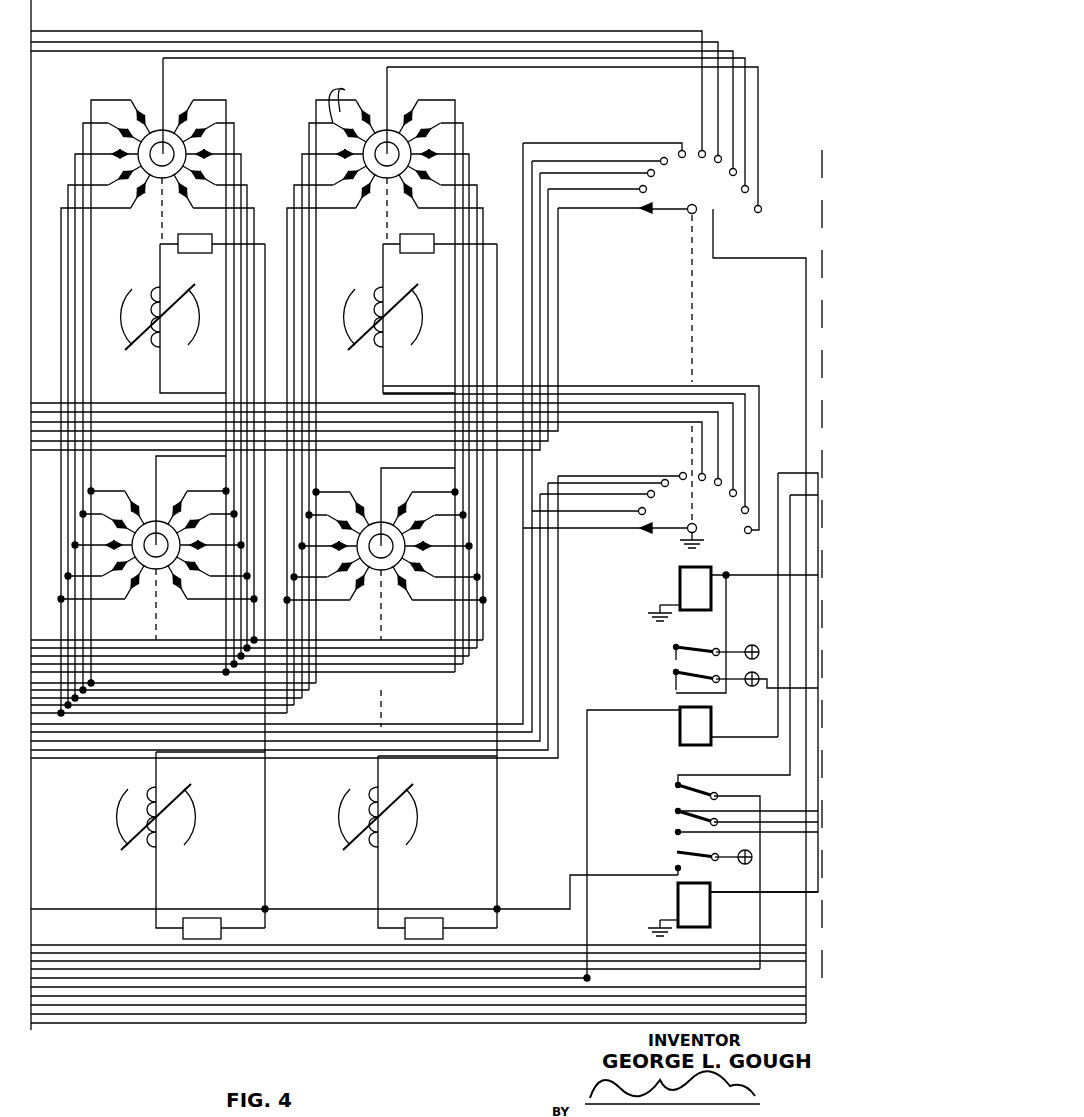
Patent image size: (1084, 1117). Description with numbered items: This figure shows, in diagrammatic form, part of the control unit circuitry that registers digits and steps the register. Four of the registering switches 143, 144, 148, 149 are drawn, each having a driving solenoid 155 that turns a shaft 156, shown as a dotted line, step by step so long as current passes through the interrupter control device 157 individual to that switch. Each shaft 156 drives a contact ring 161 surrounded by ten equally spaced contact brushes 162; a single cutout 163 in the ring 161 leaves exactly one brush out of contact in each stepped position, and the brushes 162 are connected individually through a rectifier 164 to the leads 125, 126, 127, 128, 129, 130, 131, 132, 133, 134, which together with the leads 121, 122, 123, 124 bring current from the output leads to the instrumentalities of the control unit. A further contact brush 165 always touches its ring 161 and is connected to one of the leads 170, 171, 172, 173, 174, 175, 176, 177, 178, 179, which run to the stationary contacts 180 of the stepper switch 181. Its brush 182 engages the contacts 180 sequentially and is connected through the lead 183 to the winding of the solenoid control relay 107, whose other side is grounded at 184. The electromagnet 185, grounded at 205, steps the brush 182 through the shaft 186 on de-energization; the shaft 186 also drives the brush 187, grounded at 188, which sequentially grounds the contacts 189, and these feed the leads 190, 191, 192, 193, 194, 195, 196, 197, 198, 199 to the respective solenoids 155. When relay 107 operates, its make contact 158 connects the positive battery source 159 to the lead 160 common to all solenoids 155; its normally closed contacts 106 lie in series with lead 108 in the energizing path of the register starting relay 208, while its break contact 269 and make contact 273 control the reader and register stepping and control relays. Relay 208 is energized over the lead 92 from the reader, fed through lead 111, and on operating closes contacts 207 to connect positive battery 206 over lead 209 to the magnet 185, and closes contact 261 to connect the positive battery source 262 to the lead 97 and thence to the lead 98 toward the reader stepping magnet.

The lead 92 is at (330, 987).
The lead 97 is at (68, 942).
The lead 98 is at (118, 948).
The normally closed contacts 106 is at (672, 784).
The solenoid control relay 107 is at (748, 905).
The lead 108 is at (370, 964).
The lead 111 is at (304, 956).
The lead 121 is at (255, 996).
The lead 122 is at (190, 1005).
The lead 123 is at (112, 1014).
The lead 124 is at (52, 1023).
The lead 125 is at (298, 692).
The lead 126 is at (290, 700).
The lead 127 is at (78, 724).
The lead 128 is at (122, 713).
The lead 129 is at (482, 644).
The lead 130 is at (400, 690).
The lead 131 is at (422, 708).
The lead 132 is at (438, 700).
The lead 133 is at (448, 676).
The lead 134 is at (300, 684).
The registering switch 143 is at (162, 498).
The registering switch 144 is at (382, 500).
The registering switch 148 is at (172, 98).
The registering switch 149 is at (390, 100).
The driving solenoid 155 is at (162, 348).
The shaft 156 is at (160, 226).
The interrupter control device 157 is at (185, 253).
The make contact 158 is at (678, 868).
The positive battery source 159 is at (740, 866).
The lead 160 is at (265, 778).
The contact ring 161 is at (144, 178).
The contact brush 162 is at (168, 576).
The cutout 163 is at (170, 520).
The rectifier 164 is at (345, 90).
The contact brush 165 is at (170, 124).
The lead 170 is at (558, 278).
The lead 171 is at (548, 260).
The lead 172 is at (540, 242).
The lead 173 is at (532, 176).
The lead 174 is at (523, 152).
The lead 175 is at (58, 30).
The lead 176 is at (150, 42).
The lead 177 is at (90, 51).
The lead 178 is at (296, 58).
The lead 179 is at (588, 67).
The stationary contacts 180 is at (684, 158).
The stepper switch 181 is at (680, 222).
The brush 182 is at (654, 214).
The lead 183 is at (806, 320).
The ground 184 is at (654, 918).
The electromagnet 185 is at (697, 588).
The shaft 186 is at (694, 296).
The brush 187 is at (662, 534).
The ground 188 is at (700, 548).
The contacts 189 is at (665, 490).
The lead 190 is at (523, 650).
The lead 191 is at (532, 632).
The lead 192 is at (540, 614).
The lead 193 is at (548, 596).
The lead 194 is at (558, 576).
The lead 195 is at (565, 422).
The lead 196 is at (618, 412).
The lead 197 is at (98, 402).
The lead 198 is at (378, 392).
The lead 199 is at (618, 386).
The ground 205 is at (656, 596).
The positive battery 206 is at (758, 688).
The make contacts 207 is at (674, 692).
The register starting relay 208 is at (701, 727).
The lead 209 is at (726, 600).
The contact 261 is at (674, 663).
The positive battery source 262 is at (762, 630).
The break contact 269 is at (674, 812).
The make contact 273 is at (674, 834).